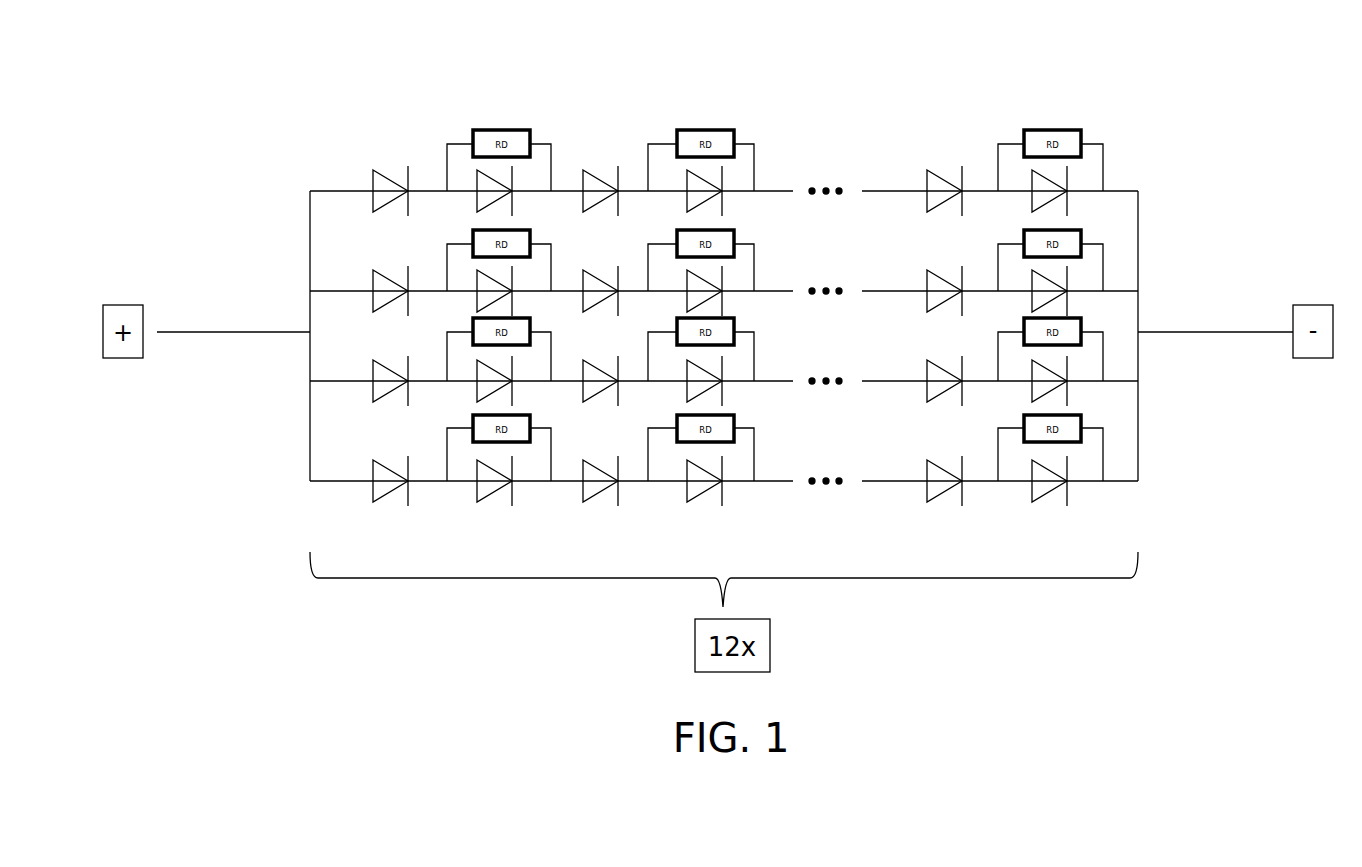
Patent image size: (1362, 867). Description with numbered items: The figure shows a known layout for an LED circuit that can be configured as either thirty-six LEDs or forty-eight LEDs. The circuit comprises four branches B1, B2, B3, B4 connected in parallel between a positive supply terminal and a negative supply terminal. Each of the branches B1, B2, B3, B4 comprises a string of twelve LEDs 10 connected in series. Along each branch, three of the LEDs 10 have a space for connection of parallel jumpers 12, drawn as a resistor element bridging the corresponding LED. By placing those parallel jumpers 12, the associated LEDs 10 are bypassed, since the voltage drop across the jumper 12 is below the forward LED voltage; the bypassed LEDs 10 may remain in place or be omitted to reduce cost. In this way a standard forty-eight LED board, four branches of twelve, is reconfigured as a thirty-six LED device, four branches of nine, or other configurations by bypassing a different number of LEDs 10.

The LED 10 is at (374, 172).
The parallel jumper 12 is at (510, 130).
The branch B1 is at (779, 129).
The branch B2 is at (1160, 273).
The branch B3 is at (1150, 378).
The branch B4 is at (1160, 457).